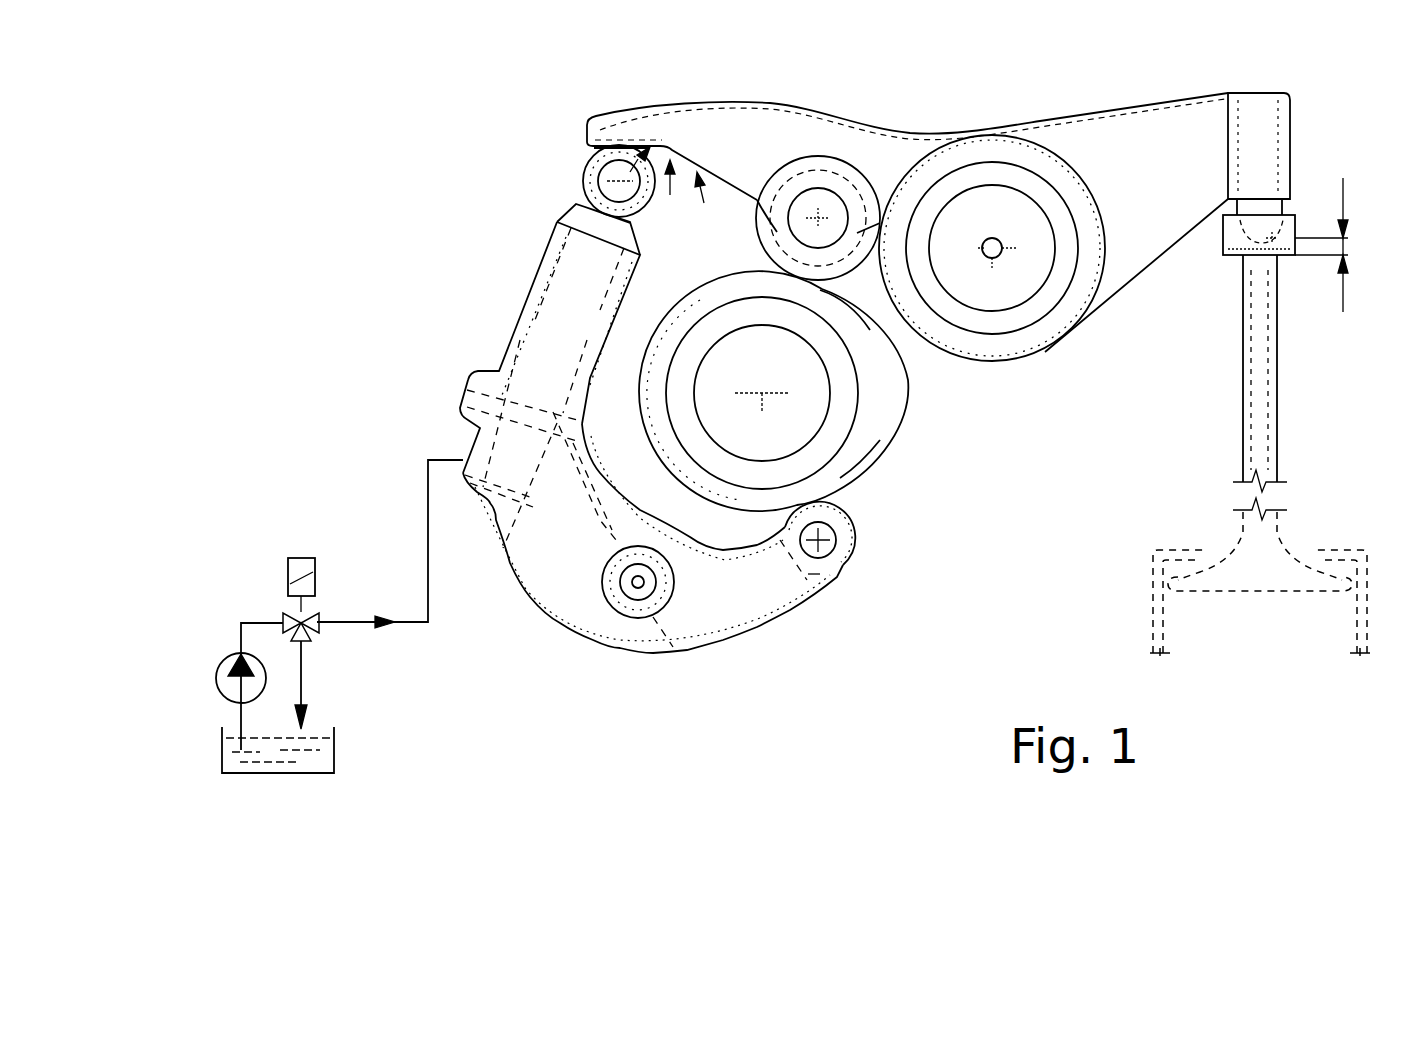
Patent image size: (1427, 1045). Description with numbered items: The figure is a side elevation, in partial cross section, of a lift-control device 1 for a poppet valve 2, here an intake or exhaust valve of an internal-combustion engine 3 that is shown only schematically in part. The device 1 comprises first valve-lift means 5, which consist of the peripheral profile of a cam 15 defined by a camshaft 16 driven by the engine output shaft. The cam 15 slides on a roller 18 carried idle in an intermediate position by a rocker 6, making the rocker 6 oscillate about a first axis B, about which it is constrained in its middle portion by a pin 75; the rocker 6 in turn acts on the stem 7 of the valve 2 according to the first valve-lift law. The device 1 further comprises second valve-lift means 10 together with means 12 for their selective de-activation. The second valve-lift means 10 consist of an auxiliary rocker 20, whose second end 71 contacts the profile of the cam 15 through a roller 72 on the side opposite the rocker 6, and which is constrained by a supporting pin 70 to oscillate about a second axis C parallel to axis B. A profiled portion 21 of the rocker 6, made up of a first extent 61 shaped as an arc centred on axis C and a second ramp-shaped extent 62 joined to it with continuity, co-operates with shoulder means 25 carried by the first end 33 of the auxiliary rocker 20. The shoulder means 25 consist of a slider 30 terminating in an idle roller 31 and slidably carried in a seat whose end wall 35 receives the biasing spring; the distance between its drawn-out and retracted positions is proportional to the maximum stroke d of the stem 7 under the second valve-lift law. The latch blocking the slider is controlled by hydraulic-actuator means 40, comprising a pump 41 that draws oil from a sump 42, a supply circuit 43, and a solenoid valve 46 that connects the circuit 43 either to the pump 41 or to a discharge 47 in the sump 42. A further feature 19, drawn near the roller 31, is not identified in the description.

The lift-control device 1 is at (373, 190).
The poppet valve 2 is at (1334, 447).
The internal-combustion engine 3 is at (1168, 516).
The first valve-lift means 5 is at (957, 407).
The rocker 6 is at (1133, 140).
The stem 7 is at (1250, 345).
The second valve-lift means 10 is at (451, 339).
The means for selective de-activation 12 is at (478, 699).
The cam 15 is at (878, 400).
The camshaft 16 is at (833, 432).
The roller 18 is at (760, 172).
The movement direction 19 is at (672, 200).
The auxiliary rocker 20 is at (687, 633).
The profiled portion 21 is at (673, 127).
The shoulder means 25 is at (543, 173).
The slider 30 is at (567, 287).
The idle roller 31 is at (607, 157).
The first end 33 is at (515, 438).
The end wall 35 is at (522, 508).
The hydraulic-actuator means 40 is at (270, 518).
The pump 41 is at (227, 682).
The sump 42 is at (323, 753).
The circuit 43 is at (432, 540).
The solenoid valve 46 is at (343, 564).
The discharge 47 is at (307, 670).
The first extent 61 is at (622, 170).
The second ramp-shaped extent 62 is at (733, 210).
The supporting pin 70 is at (663, 575).
The second end 71 is at (815, 572).
The roller 72 is at (857, 552).
The pin 75 is at (1067, 262).
The first axis B is at (995, 256).
The second axis C is at (637, 589).
The maximum stroke d is at (1332, 245).